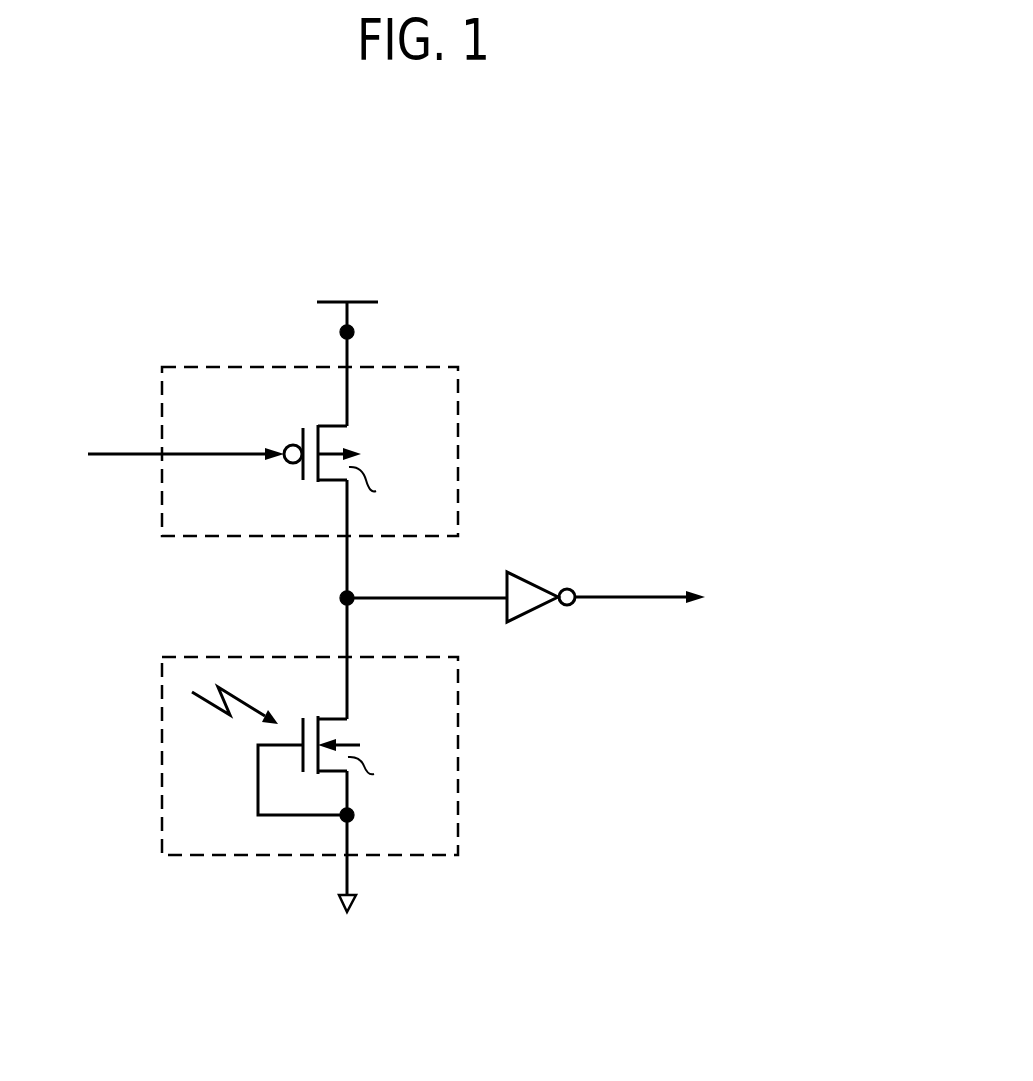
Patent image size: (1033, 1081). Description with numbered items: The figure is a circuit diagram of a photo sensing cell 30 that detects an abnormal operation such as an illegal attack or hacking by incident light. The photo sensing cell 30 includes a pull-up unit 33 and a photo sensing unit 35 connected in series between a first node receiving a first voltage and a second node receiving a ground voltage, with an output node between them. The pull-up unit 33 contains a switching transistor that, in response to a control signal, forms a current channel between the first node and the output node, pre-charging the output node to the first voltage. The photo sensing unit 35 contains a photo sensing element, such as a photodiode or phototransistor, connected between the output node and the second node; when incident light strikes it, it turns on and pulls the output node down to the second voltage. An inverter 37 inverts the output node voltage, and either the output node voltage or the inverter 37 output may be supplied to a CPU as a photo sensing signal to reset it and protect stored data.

The photo sensing cell 30 is at (650, 221).
The pull-up unit 33 is at (458, 433).
The photo sensing unit 35 is at (458, 711).
The inverter 37 is at (533, 580).